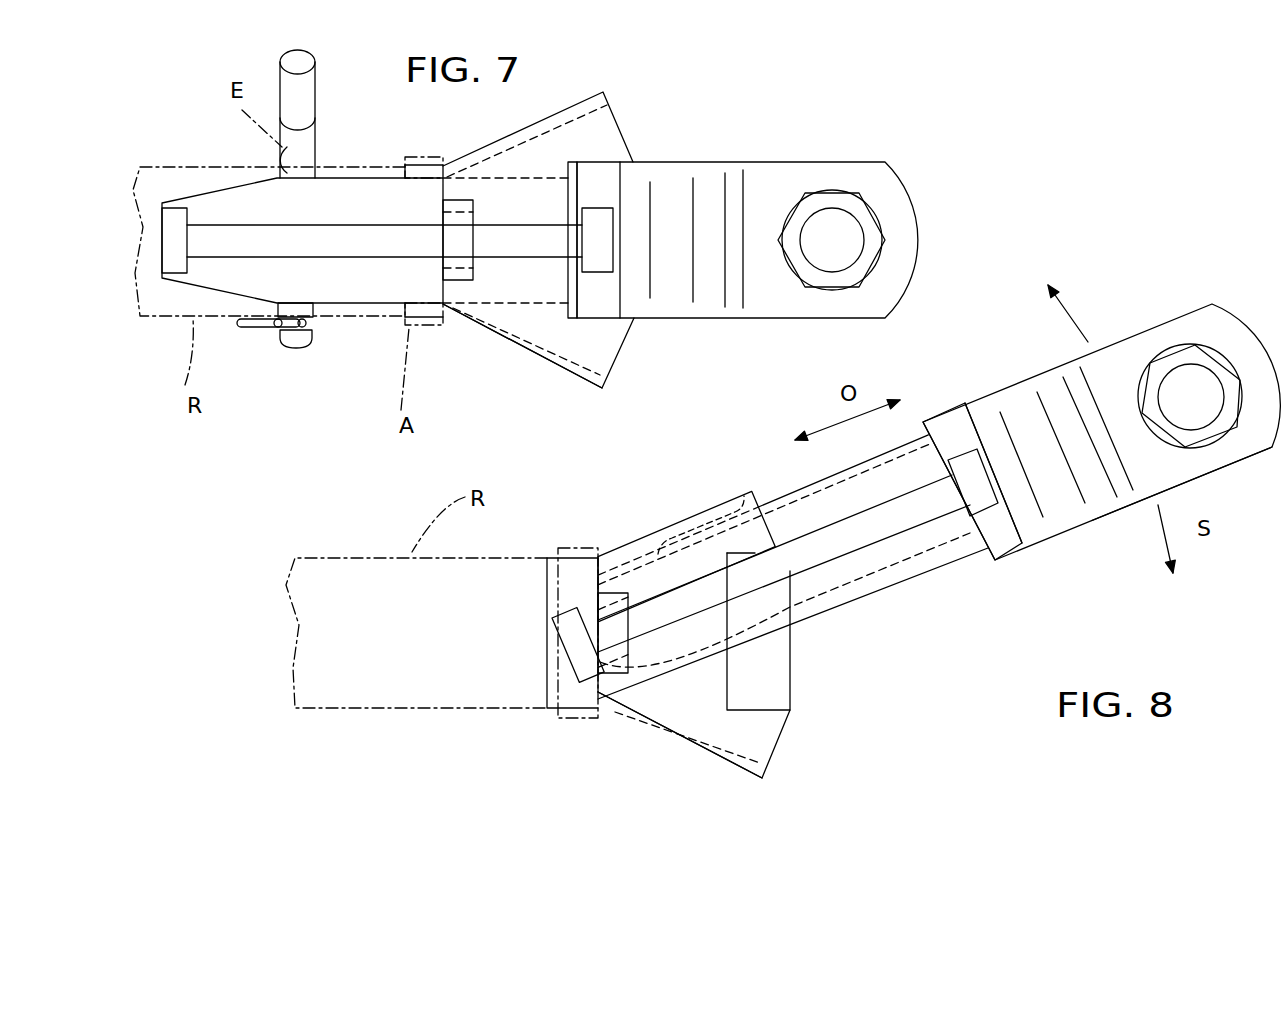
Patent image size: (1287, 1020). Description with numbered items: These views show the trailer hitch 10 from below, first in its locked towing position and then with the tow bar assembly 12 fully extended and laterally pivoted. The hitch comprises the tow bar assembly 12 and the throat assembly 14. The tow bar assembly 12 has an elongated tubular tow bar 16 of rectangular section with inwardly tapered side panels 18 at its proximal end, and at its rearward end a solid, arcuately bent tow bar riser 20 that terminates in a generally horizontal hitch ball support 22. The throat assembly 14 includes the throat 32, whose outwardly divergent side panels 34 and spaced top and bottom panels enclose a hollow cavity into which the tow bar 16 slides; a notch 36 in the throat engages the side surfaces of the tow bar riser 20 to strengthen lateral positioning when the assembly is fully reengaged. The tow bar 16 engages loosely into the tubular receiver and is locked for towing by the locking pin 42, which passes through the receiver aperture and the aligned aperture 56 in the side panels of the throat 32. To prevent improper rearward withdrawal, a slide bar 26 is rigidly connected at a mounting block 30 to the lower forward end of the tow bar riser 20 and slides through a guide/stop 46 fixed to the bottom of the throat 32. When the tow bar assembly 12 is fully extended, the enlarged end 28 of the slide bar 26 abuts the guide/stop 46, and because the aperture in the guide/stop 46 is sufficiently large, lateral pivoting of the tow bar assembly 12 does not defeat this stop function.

In FIG. 7, the trailer hitch 10 is at (680, 80).
In FIG. 7, the tow bar assembly 12 is at (693, 154).
In FIG. 8, the tow bar assembly 12 is at (961, 395).
In FIG. 7, the throat assembly 14 is at (522, 358).
In FIG. 8, the throat assembly 14 is at (732, 774).
In FIG. 7, the tow bar 16 is at (348, 175).
In FIG. 8, the tow bar 16 is at (918, 567).
In FIG. 8, the tapered side panels 18 is at (657, 673).
In FIG. 7, the tow bar riser 20 is at (594, 320).
In FIG. 8, the tow bar riser 20 is at (940, 413).
In FIG. 8, the hitch ball support 22 is at (1093, 522).
In FIG. 7, the slide bar 26 is at (362, 258).
In FIG. 8, the slide bar 26 is at (877, 542).
In FIG. 7, the enlarged end 28 is at (180, 207).
In FIG. 8, the enlarged end 28 is at (565, 655).
In FIG. 7, the mounting block 30 is at (598, 208).
In FIG. 8, the mounting block 30 is at (982, 518).
In FIG. 7, the throat 32 is at (567, 372).
In FIG. 8, the throat 32 is at (683, 752).
In FIG. 8, the side panels 34 is at (743, 495).
In FIG. 8, the notch 36 is at (758, 710).
In FIG. 7, the locking pin 42 is at (315, 97).
In FIG. 7, the guide/stop 46 is at (460, 198).
In FIG. 8, the guide/stop 46 is at (615, 677).
In FIG. 8, the aperture 56 is at (658, 552).